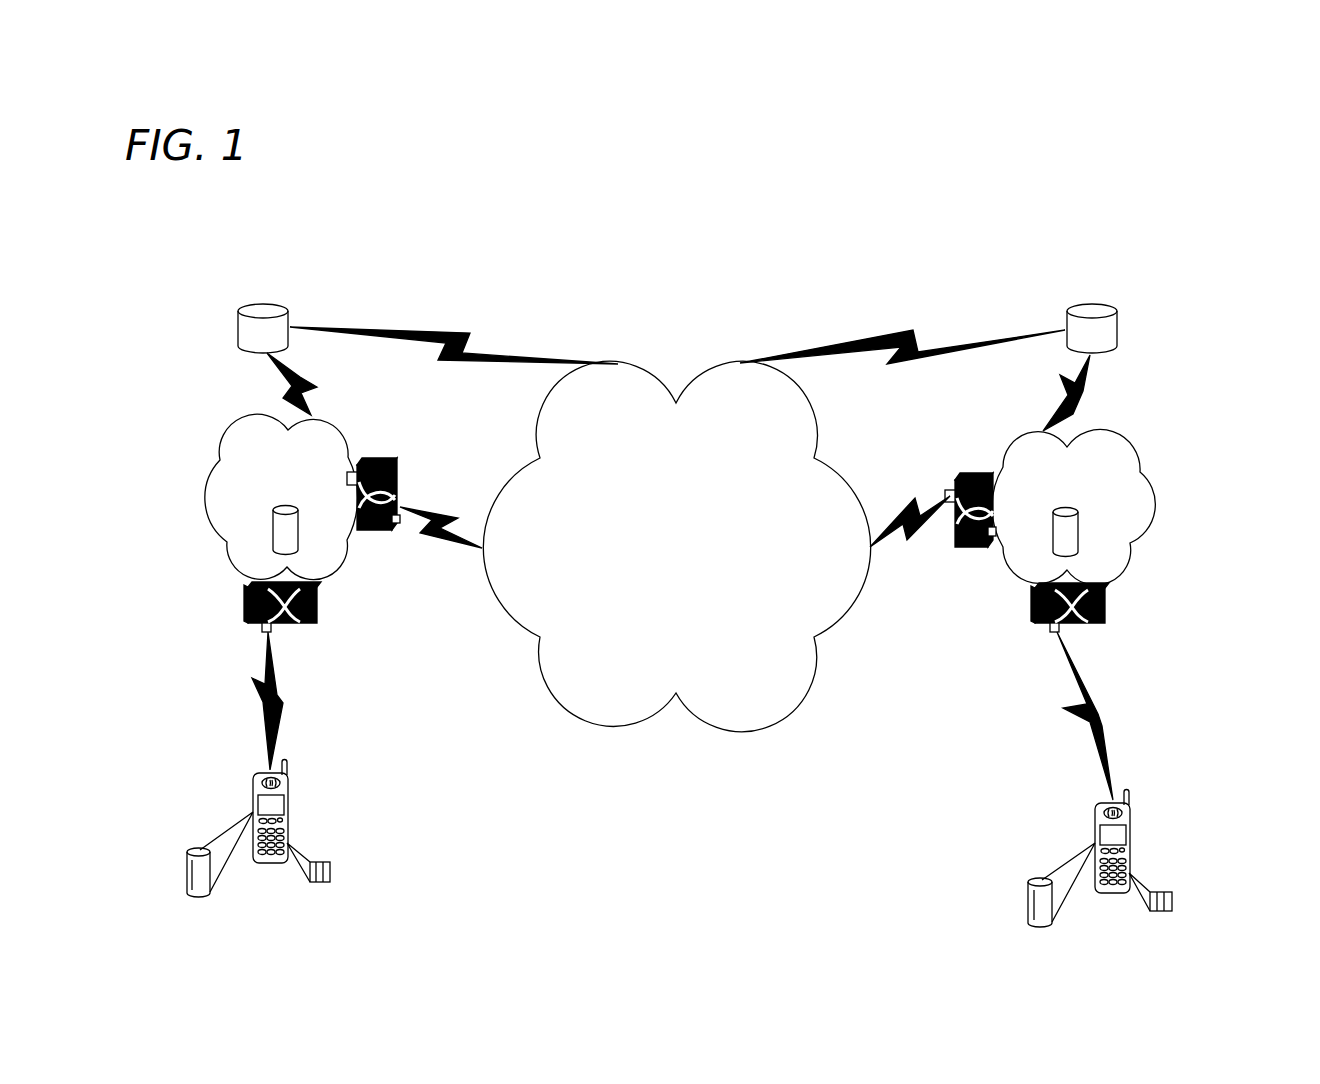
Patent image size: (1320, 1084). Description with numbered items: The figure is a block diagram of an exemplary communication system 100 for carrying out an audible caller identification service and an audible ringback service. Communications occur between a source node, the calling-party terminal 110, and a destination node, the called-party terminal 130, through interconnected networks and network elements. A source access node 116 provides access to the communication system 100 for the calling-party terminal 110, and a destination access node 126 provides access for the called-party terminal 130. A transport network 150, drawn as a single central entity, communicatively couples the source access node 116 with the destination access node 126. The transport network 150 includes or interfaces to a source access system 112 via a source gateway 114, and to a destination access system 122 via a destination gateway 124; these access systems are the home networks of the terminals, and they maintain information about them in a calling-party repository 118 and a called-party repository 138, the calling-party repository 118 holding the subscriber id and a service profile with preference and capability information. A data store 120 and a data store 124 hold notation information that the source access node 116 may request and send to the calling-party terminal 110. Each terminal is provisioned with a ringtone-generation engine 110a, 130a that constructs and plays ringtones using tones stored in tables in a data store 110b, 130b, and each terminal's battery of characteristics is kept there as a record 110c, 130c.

The communication system 100 is at (702, 276).
The calling-party terminal 110 is at (288, 776).
The calling-party ringtone-generation engine 110a is at (330, 862).
The calling-party data store 110b is at (197, 848).
The calling-party characteristics record 110c is at (189, 877).
The source access system 112 is at (206, 492).
The source gateway 114 is at (378, 457).
The source access node 116 is at (320, 609).
The calling-party repository 118 is at (272, 524).
The data store 120 is at (428, 359).
The destination access system 122 is at (1153, 507).
The destination gateway 124 is at (952, 459).
The destination access node 126 is at (1108, 607).
The called-party terminal 130 is at (1130, 806).
The called-party ringtone-generation engine 130a is at (1172, 892).
The called-party data store 130b is at (1039, 878).
The called-party characteristics record 130c is at (1031, 906).
The called-party repository 138 is at (1079, 525).
The transport network 150 is at (796, 686).